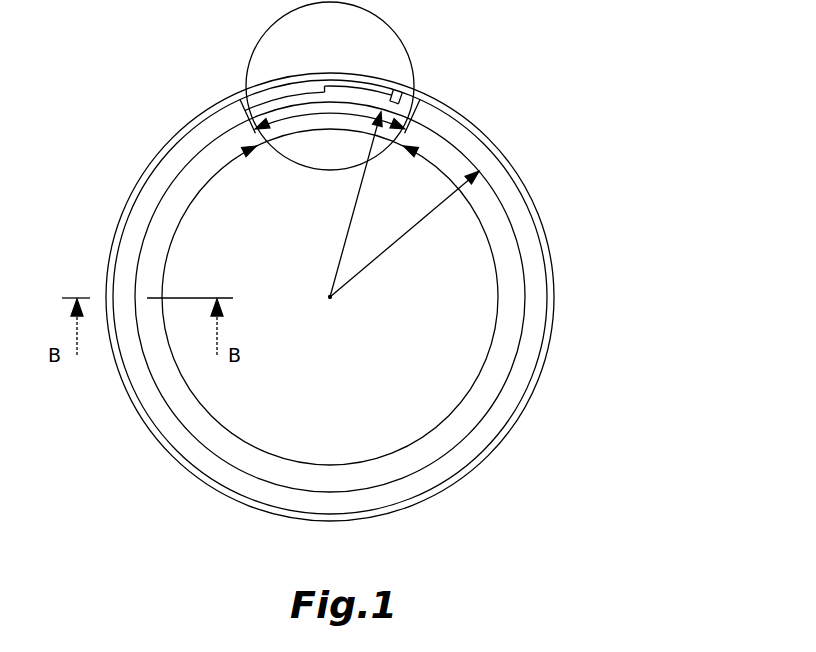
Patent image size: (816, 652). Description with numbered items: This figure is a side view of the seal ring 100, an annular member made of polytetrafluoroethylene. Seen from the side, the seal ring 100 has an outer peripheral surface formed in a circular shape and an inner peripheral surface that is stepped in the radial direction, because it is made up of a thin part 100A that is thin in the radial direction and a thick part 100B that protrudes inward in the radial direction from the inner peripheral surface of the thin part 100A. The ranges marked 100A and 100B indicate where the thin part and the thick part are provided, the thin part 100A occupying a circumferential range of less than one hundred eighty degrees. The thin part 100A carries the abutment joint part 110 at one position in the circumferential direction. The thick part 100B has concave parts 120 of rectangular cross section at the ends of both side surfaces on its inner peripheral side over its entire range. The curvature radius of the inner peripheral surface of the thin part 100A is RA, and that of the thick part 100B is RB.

The seal ring 100 is at (548, 178).
The abutment joint part 110 is at (293, 65).
The concave parts 120 is at (535, 257).
The thin part 100A is at (332, 117).
The thick part 100B is at (485, 360).
The curvature radius of the inner peripheral surface of the thin part RA is at (343, 204).
The curvature radius of the inner peripheral surface of the thick part RB is at (404, 234).